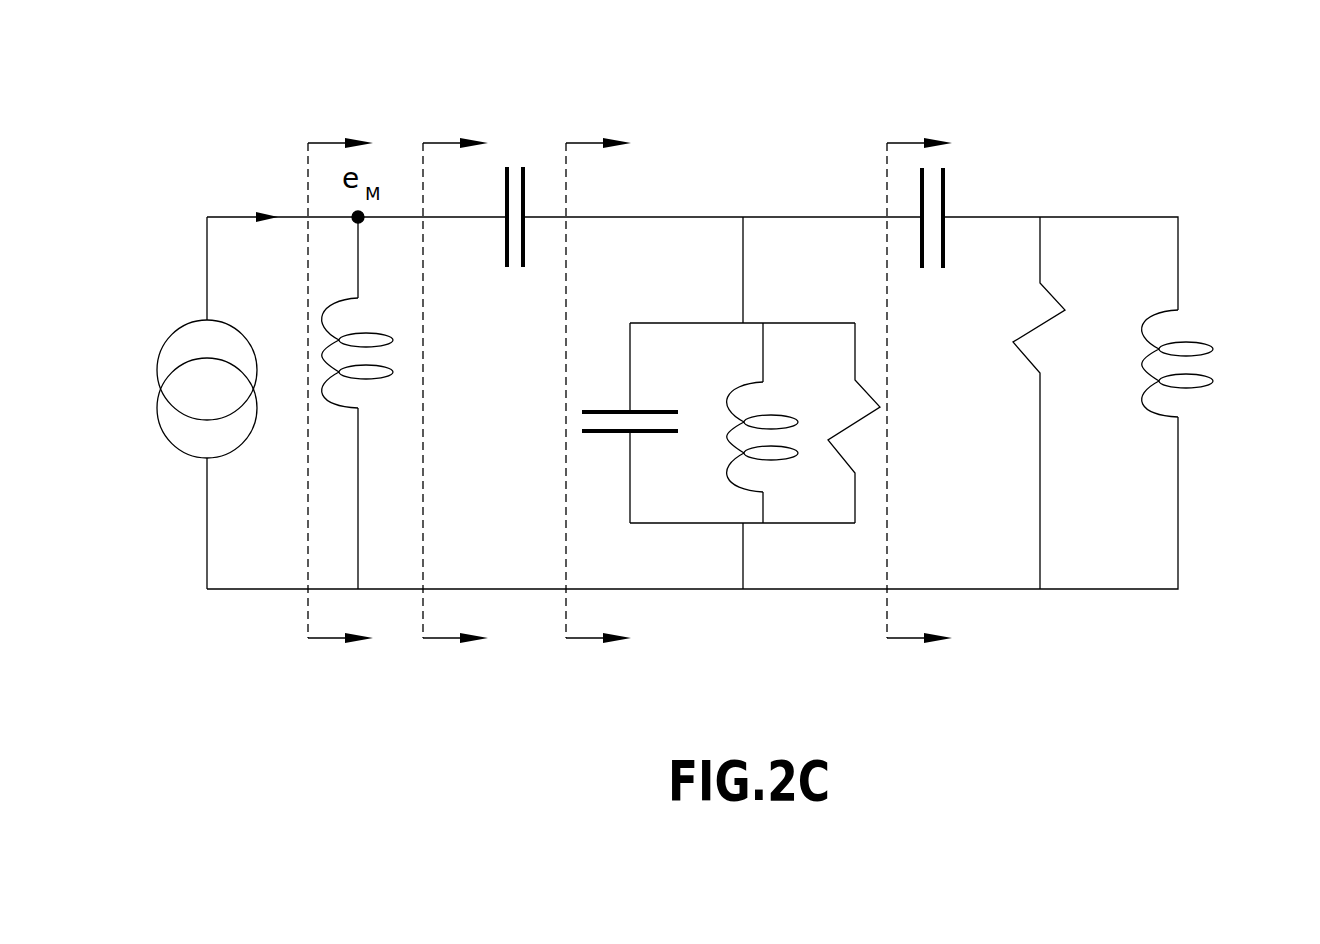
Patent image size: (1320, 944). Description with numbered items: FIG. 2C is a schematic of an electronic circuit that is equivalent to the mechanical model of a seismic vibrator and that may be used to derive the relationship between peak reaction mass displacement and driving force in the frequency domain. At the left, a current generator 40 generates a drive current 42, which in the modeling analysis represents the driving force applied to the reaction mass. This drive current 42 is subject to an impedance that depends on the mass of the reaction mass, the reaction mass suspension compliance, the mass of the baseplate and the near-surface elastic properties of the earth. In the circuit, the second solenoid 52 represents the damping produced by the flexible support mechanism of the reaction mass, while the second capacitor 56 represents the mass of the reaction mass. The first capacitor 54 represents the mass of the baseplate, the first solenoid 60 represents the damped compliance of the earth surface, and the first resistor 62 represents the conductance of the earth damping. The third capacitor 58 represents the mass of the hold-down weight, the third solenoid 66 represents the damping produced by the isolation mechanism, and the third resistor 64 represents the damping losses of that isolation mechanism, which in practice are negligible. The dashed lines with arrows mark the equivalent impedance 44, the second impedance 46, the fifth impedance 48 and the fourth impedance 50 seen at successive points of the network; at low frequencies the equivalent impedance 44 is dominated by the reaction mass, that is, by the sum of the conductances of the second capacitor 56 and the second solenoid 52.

The current generator 40 is at (165, 430).
The current iDF 42 is at (215, 217).
The equivalent impedance Zeq 44 is at (313, 143).
The impedance Z2 46 is at (424, 143).
The impedance Z5 48 is at (567, 143).
The impedance Z4 50 is at (888, 143).
The solenoid L2 52 is at (393, 342).
The capacitor C1 54 is at (582, 431).
The capacitor C2 56 is at (523, 248).
The capacitor C3 58 is at (943, 192).
The solenoid L1 60 is at (733, 475).
The resistor R1 62 is at (853, 427).
The resistor R3 64 is at (1052, 295).
The solenoid L3 66 is at (1212, 350).